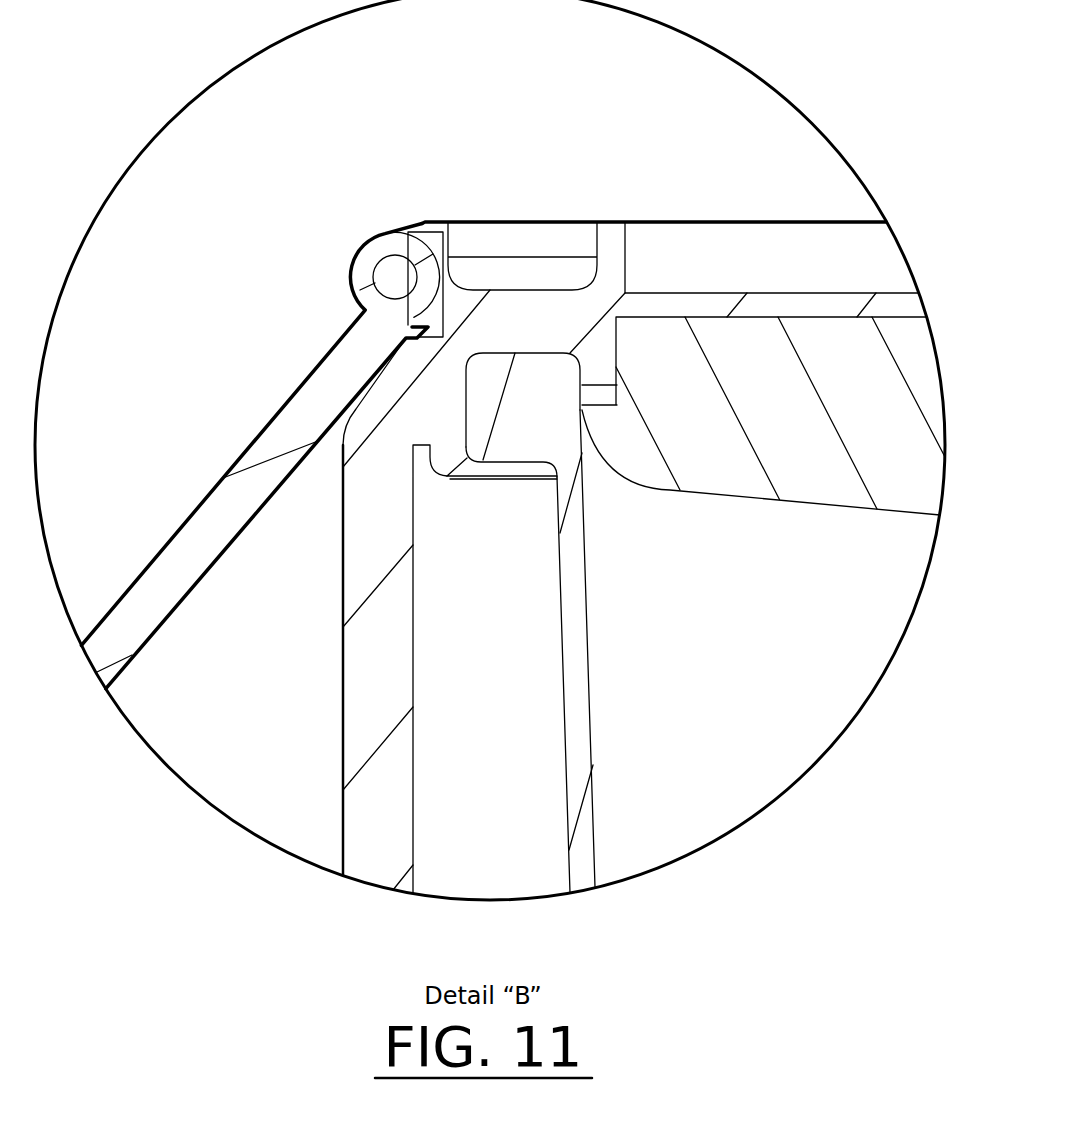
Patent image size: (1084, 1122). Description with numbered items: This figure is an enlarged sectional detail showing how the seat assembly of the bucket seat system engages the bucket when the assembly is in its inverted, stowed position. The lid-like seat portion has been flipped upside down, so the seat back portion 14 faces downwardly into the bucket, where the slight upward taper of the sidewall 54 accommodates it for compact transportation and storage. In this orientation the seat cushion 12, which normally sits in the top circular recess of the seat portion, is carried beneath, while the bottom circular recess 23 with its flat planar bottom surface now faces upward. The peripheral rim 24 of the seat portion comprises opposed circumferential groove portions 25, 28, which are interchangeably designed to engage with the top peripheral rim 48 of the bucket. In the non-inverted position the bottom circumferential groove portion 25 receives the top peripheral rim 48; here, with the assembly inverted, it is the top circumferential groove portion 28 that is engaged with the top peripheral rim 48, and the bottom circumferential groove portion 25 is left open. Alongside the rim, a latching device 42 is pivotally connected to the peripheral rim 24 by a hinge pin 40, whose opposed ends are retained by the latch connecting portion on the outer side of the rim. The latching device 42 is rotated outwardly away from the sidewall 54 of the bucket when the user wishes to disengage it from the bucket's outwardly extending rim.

The seat cushion 12 is at (713, 475).
The seat back portion 14 is at (363, 731).
The bottom circular recess 23 is at (708, 253).
The peripheral rim 24 is at (398, 390).
The bottom circumferential groove portion 25 is at (532, 278).
The top circumferential groove portion 28 is at (507, 353).
The hinge pin 40 is at (395, 277).
The latching device 42 is at (215, 508).
The top peripheral rim 48 is at (542, 420).
The sidewall 54 is at (575, 797).